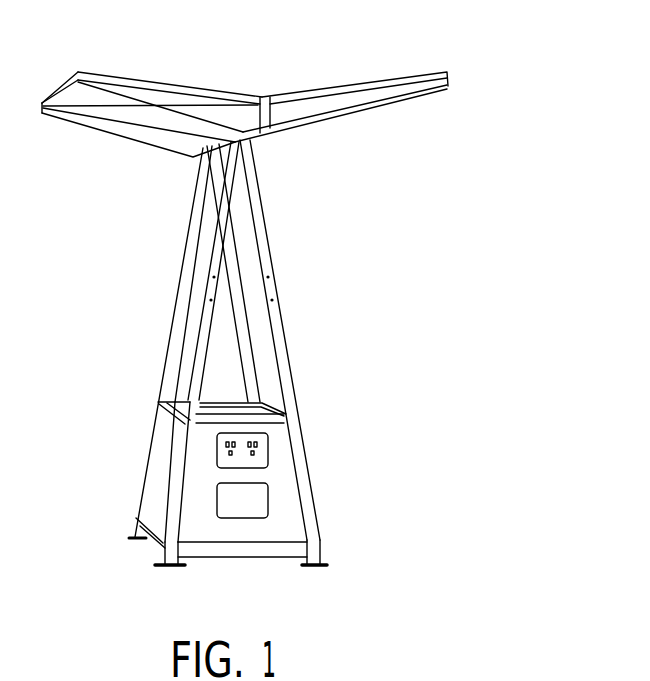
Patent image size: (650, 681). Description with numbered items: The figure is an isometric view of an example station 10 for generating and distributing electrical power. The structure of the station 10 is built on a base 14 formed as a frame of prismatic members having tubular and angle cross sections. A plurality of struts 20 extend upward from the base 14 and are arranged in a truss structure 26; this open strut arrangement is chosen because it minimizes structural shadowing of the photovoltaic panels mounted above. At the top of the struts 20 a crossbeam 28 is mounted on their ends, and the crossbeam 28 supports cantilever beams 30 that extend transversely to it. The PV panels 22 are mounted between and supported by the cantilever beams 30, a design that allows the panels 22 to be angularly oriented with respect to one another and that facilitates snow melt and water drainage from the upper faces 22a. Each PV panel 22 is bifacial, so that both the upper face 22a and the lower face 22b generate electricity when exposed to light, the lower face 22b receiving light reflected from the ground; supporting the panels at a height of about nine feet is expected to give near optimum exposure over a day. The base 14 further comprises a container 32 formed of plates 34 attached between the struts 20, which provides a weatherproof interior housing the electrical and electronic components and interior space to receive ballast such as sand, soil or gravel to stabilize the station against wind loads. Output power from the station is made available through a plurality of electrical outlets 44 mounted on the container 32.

The station for generating and distributing electrical power 10 is at (321, 313).
The base 14 is at (245, 514).
The struts 20 is at (196, 340).
The photovoltaic panel 22 is at (245, 94).
The upper face 22a is at (102, 72).
The lower face 22b is at (84, 95).
The truss structure 26 is at (112, 318).
The crossbeam 28 is at (270, 100).
The cantilever beams 30 is at (368, 97).
The container 32 is at (172, 482).
The plates 34 is at (281, 472).
The electrical outlets 44 is at (263, 455).